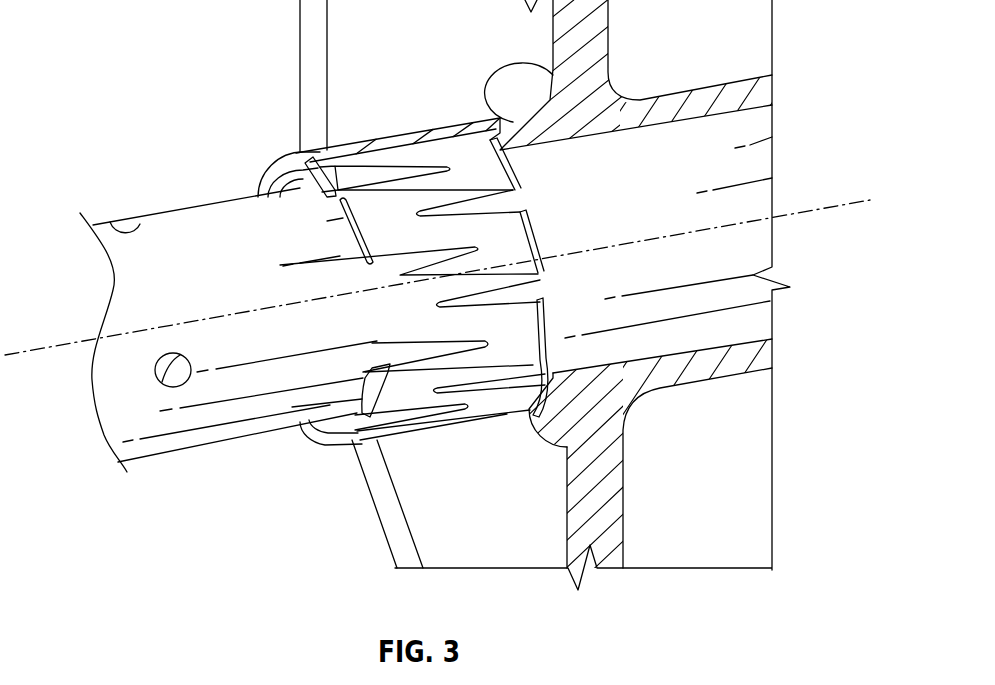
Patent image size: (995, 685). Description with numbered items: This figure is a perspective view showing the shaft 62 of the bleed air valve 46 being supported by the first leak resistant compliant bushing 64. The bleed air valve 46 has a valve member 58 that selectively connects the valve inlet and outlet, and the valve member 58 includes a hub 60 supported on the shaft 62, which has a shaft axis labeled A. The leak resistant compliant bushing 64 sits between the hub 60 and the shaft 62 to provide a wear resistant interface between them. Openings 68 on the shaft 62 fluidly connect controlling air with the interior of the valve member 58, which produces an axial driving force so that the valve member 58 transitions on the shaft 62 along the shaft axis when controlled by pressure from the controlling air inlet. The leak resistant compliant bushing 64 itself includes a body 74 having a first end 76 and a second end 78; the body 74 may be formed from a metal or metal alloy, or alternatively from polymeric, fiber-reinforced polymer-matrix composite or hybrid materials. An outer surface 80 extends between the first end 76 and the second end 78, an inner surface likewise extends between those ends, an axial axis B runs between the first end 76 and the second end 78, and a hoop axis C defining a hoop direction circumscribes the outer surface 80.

The bleed air valve 46 is at (257, 60).
The valve member 58 is at (310, 88).
The hub 60 is at (714, 362).
The shaft 62 is at (753, 312).
The first leak resistant compliant bushing 64 is at (541, 370).
The openings 68 is at (153, 383).
The body 74 is at (500, 241).
The first end 76 is at (377, 307).
The second end 78 is at (540, 308).
The outer surface 80 is at (410, 400).